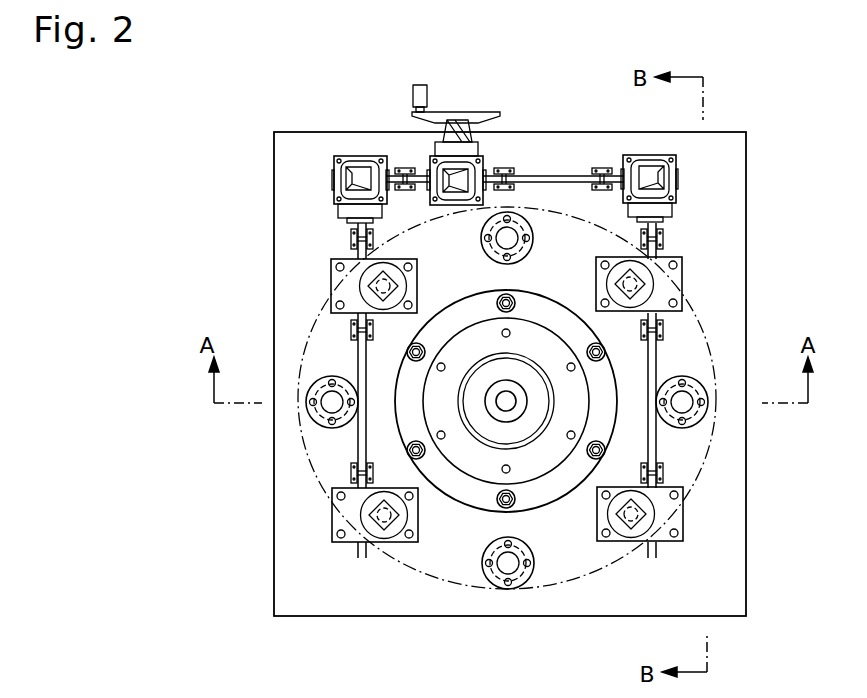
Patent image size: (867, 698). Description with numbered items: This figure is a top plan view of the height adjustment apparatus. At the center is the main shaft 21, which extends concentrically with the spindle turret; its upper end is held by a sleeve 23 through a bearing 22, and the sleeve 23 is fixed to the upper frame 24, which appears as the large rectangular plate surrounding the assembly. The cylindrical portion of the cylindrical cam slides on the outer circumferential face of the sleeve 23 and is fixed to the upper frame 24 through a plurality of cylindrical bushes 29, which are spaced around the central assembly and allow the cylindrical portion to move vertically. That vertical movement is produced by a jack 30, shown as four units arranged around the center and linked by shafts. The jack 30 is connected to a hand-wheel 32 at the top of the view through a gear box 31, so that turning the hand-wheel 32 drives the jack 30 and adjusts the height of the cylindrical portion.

The main shaft 21 is at (527, 413).
The bearing 22 is at (470, 457).
The sleeve 23 is at (545, 490).
The upper frame 24 is at (726, 234).
The cylindrical bush 29 is at (518, 220).
The jack 30 is at (331, 280).
The gear box 31 is at (334, 172).
The hand-wheel 32 is at (457, 112).